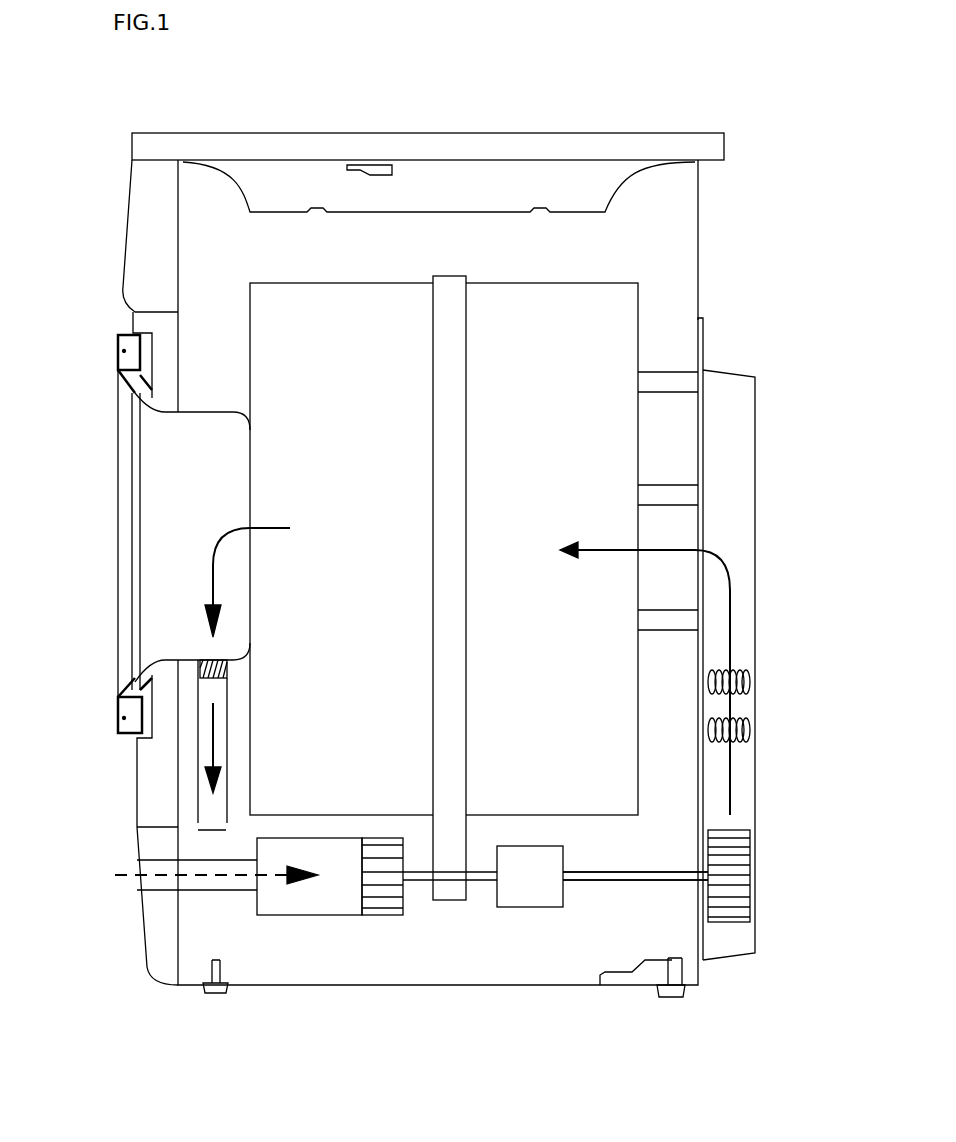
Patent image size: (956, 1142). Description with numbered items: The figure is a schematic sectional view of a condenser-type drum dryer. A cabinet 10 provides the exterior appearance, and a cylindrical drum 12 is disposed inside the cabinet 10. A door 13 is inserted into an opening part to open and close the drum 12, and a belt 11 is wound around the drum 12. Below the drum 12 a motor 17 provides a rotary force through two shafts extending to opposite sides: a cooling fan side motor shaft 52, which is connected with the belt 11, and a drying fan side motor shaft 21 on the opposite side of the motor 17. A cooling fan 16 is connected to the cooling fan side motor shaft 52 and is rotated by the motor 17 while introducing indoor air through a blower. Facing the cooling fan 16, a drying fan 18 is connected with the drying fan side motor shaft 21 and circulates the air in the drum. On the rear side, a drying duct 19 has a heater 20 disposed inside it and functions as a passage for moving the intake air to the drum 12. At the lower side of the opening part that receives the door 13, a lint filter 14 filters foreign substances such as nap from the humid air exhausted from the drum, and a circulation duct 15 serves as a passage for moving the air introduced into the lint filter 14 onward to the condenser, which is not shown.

The cabinet 10 is at (698, 252).
The belt 11 is at (458, 290).
The drum 12 is at (372, 305).
The door 13 is at (122, 510).
The lint filter 14 is at (200, 672).
The circulation duct 15 is at (203, 812).
The cooling fan 16 is at (378, 903).
The motor 17 is at (505, 900).
The drying fan 18 is at (731, 915).
The drying duct 19 is at (748, 772).
The heater 20 is at (745, 672).
The drying fan side motor shaft 21 is at (595, 876).
The cooling fan side motor shaft 52 is at (482, 878).